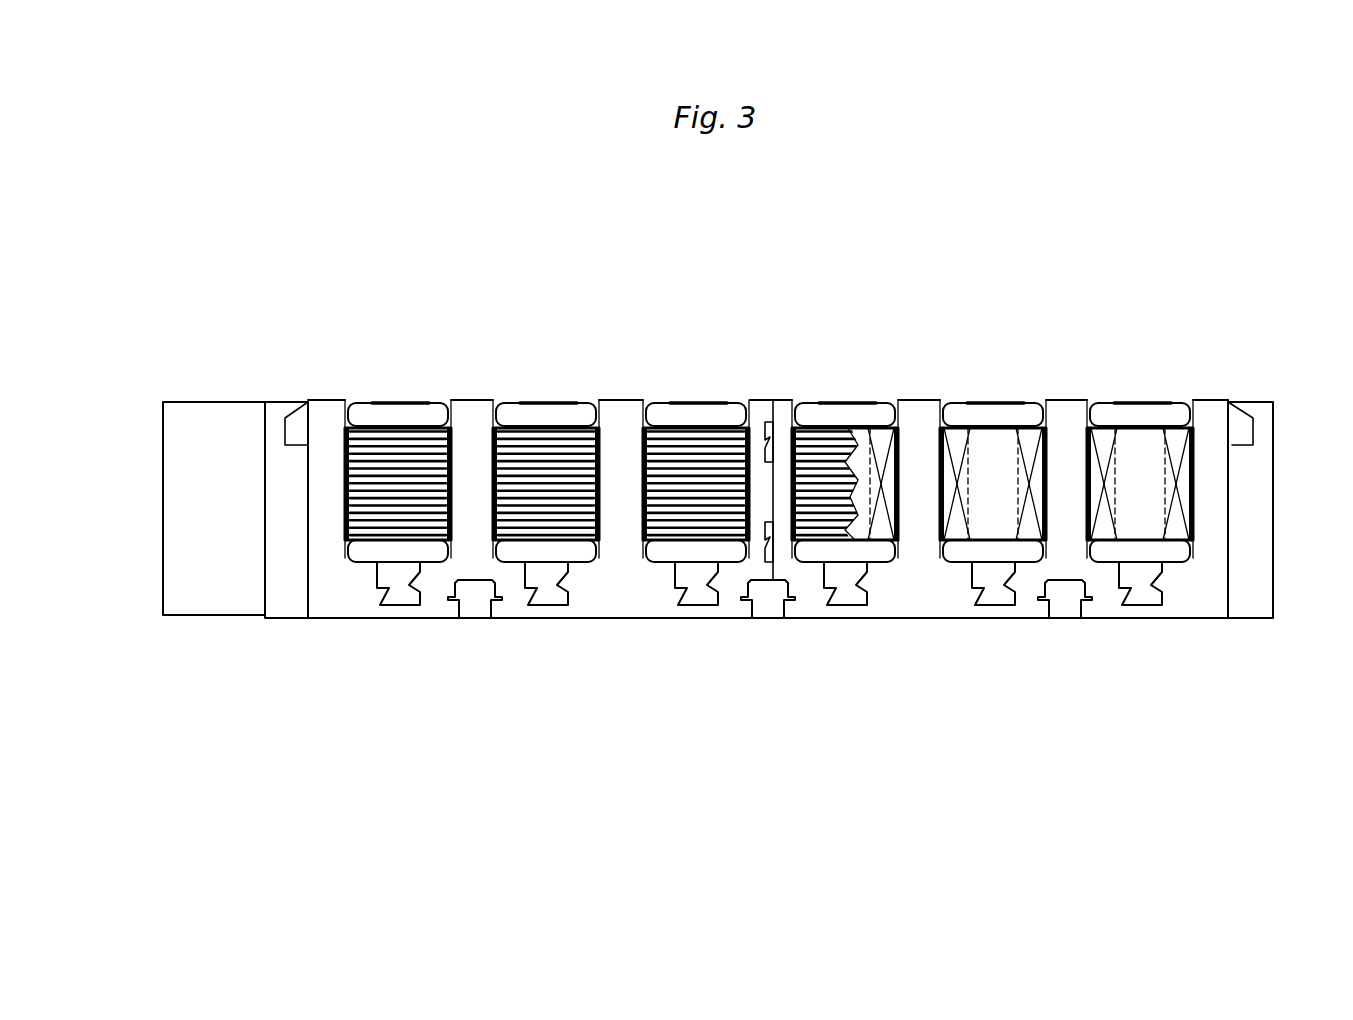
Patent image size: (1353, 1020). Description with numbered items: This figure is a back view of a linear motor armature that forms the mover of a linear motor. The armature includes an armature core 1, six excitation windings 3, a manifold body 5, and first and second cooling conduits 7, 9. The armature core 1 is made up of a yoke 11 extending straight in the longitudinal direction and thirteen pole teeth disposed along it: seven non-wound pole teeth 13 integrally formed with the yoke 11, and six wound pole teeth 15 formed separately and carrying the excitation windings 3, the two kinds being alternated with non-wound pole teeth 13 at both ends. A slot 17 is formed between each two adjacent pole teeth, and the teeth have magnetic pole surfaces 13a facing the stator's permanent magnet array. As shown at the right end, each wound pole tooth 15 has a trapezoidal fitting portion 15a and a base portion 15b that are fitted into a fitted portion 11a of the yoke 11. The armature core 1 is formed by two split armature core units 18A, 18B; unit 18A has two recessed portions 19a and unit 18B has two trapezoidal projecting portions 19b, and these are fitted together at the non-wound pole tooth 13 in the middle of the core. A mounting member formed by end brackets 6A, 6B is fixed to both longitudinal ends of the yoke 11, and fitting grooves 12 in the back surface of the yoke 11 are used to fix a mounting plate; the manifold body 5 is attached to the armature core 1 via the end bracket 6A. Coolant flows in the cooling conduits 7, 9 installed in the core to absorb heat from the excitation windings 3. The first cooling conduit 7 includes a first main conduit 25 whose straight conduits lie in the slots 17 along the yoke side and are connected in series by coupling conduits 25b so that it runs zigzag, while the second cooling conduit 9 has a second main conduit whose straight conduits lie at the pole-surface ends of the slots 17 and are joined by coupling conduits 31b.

The armature core 1 is at (335, 397).
The excitation winding 3 is at (370, 523).
The manifold body 5 is at (185, 403).
The end bracket 6A is at (285, 495).
The end bracket 6B is at (1263, 573).
The first cooling conduit 7 is at (640, 567).
The second cooling conduit 9 is at (668, 396).
The yoke 11 is at (640, 597).
The fitted portion 11a is at (1140, 583).
The fitting groove 12 is at (480, 605).
The non-wound pole tooth 13 is at (1210, 517).
The magnetic pole surface 13a is at (332, 400).
The wound pole tooth 15 is at (405, 578).
The fitting portion 15a is at (383, 403).
The base portion 15b is at (1125, 580).
The slot 17 is at (362, 462).
The split armature core unit 18A is at (328, 627).
The split armature core unit 18B is at (975, 625).
The recessed portion 19a is at (737, 425).
The projecting portion 19b is at (793, 430).
The first main conduit 25 is at (673, 550).
The coupling conduit 25b is at (410, 548).
The coupling conduit 31b is at (419, 403).